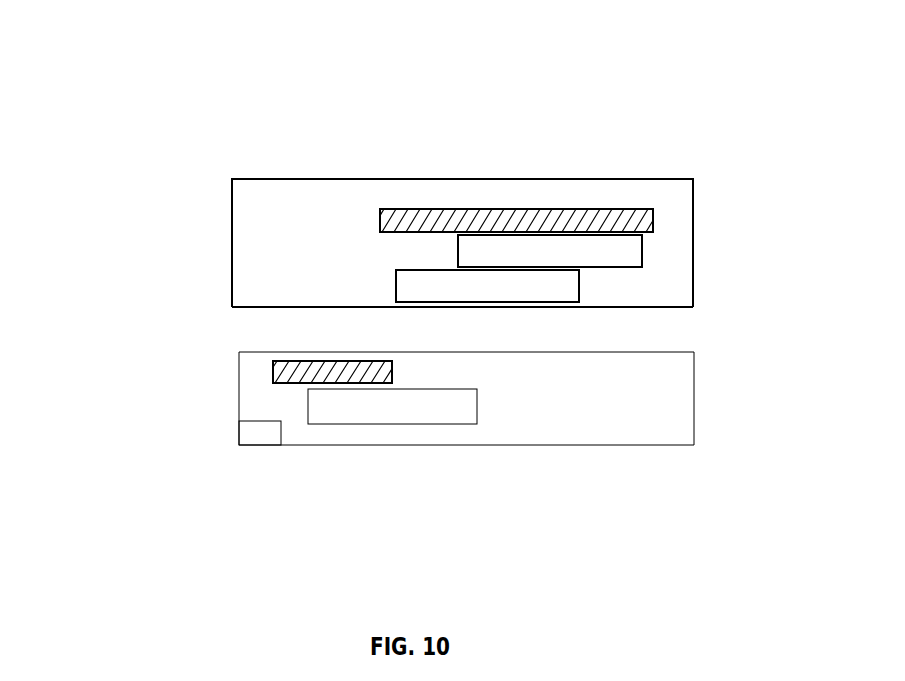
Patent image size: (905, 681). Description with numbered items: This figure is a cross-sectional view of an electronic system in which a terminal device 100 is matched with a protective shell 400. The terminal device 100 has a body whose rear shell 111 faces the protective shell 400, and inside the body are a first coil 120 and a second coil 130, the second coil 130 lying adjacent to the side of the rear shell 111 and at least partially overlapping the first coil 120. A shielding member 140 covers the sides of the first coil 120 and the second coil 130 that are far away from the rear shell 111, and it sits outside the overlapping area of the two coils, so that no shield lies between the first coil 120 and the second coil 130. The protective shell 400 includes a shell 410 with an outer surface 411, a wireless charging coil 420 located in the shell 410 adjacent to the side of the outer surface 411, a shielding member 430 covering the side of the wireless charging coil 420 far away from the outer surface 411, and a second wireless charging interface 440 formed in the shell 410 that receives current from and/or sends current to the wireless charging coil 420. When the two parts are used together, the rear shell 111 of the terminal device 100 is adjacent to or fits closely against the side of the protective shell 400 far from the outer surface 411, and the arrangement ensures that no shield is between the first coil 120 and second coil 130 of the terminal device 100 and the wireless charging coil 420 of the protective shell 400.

The terminal device 100 is at (229, 157).
The rear shell 111 is at (253, 308).
The first coil 120 is at (627, 252).
The second coil 130 is at (563, 287).
The shielding member 140 is at (515, 222).
The protective shell 400 is at (707, 378).
The shell 410 is at (677, 432).
The outer surface 411 is at (605, 445).
The wireless charging coil 420 is at (330, 410).
The shielding member 430 is at (273, 372).
The second wireless charging interface 440 is at (247, 433).